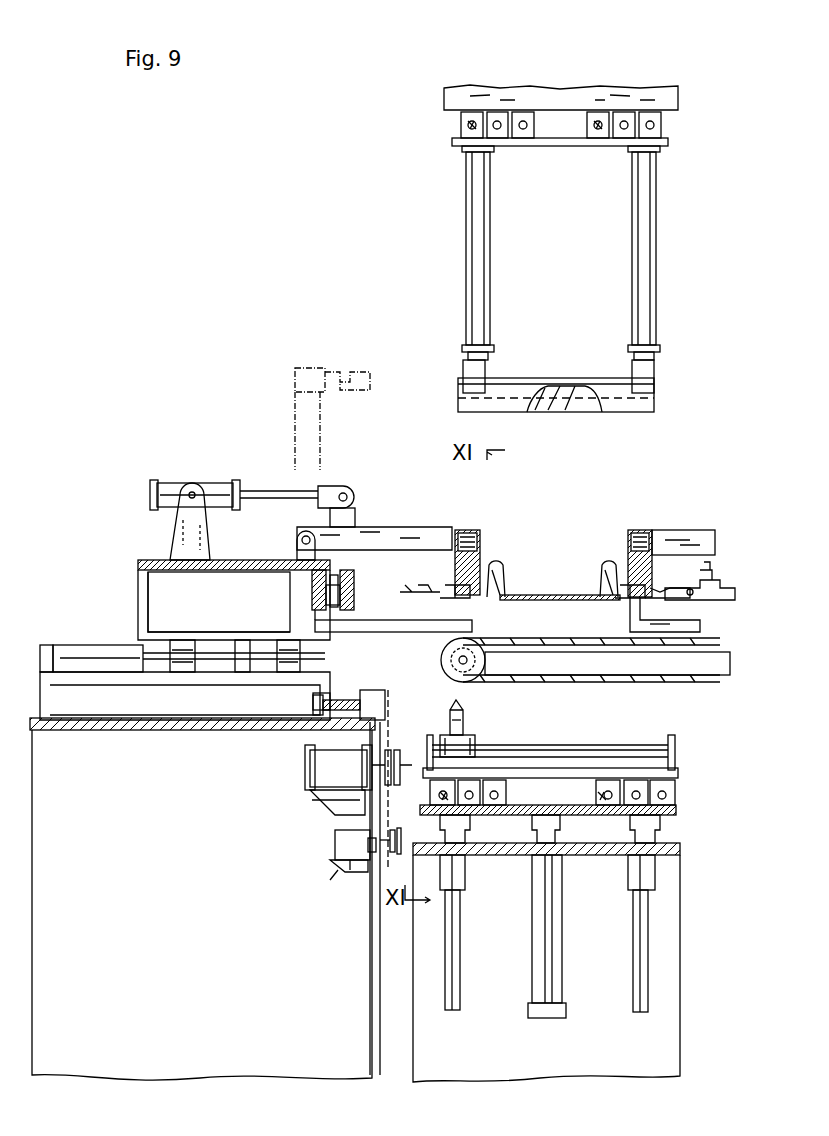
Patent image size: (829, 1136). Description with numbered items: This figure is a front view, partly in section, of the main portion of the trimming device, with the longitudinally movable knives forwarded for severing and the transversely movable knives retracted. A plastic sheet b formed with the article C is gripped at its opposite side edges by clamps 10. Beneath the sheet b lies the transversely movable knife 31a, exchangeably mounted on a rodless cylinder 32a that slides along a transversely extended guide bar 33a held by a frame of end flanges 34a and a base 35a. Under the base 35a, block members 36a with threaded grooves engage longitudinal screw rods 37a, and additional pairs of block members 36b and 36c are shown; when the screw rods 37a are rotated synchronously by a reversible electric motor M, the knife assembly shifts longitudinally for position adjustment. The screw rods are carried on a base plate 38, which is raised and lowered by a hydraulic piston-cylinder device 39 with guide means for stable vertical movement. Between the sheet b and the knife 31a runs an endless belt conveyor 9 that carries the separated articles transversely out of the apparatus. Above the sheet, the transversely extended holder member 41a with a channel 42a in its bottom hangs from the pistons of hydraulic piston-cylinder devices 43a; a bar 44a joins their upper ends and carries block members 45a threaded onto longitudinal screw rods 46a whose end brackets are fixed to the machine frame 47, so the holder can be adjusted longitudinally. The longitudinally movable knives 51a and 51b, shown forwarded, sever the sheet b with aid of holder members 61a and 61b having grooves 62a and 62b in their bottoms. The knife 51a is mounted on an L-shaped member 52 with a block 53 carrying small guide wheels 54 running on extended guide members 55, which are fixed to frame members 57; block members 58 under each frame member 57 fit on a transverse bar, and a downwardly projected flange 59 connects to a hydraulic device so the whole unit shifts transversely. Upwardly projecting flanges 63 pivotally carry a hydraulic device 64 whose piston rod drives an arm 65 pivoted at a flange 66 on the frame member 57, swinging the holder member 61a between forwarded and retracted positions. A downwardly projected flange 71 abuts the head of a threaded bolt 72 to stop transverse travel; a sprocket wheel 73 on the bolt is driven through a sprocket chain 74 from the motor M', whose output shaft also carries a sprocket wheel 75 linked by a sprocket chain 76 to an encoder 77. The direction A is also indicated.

The endless belt conveyor 9 is at (715, 648).
The clamp 10 is at (730, 577).
The transversely movable knife 31a is at (464, 708).
The rodless cylinder 32a is at (466, 742).
The guide bar 33a is at (572, 745).
The end flange 34a is at (430, 745).
The base 35a is at (672, 768).
The block member 36a is at (660, 828).
The block member 36b is at (676, 812).
The block member 36c is at (675, 795).
The screw rod 37a is at (448, 792).
The base plate 38 is at (584, 855).
The hydraulic piston-cylinder device 39 is at (540, 967).
The holder member 41a is at (498, 390).
The extended channel 42a is at (572, 408).
The hydraulic piston-cylinder device 43a is at (466, 262).
The transversely extended bar 44a is at (548, 146).
The block member 45a is at (468, 122).
The screw rod 46a is at (472, 125).
The machine frame 47 is at (556, 84).
The longitudinally movable knife 51a is at (462, 598).
The longitudinally movable knife 51b is at (645, 600).
The L-shaped member 52 is at (408, 645).
The block 53 is at (330, 632).
The small guide wheel 54 is at (320, 595).
The extended guide member 55 is at (330, 584).
The frame member 57 is at (226, 562).
The block member 58 is at (180, 690).
The downwardly projected flange 59 is at (85, 645).
The holder member 61a is at (470, 560).
The holder member 61b is at (625, 575).
The longitudinally extended groove 62a is at (496, 578).
The longitudinally extended groove 62b is at (608, 597).
The upwardly projecting flange 63 is at (178, 532).
The cylinder-piston hydraulic device 64 is at (170, 485).
The arm 65 is at (355, 512).
The upwardly projecting flange 66 is at (298, 545).
The downwardly projected flange 71 is at (320, 705).
The threaded bolt 72 is at (340, 712).
The sprocket wheel 73 is at (392, 712).
The sprocket chain 74 is at (335, 712).
The sprocket wheel 75 is at (398, 762).
The sprocket chain 76 is at (355, 835).
The encoder 77 is at (362, 870).
The reversible electric motor M is at (330, 785).
The direction arrow A is at (645, 700).
The plastic sheet b is at (533, 633).
The article C is at (548, 575).